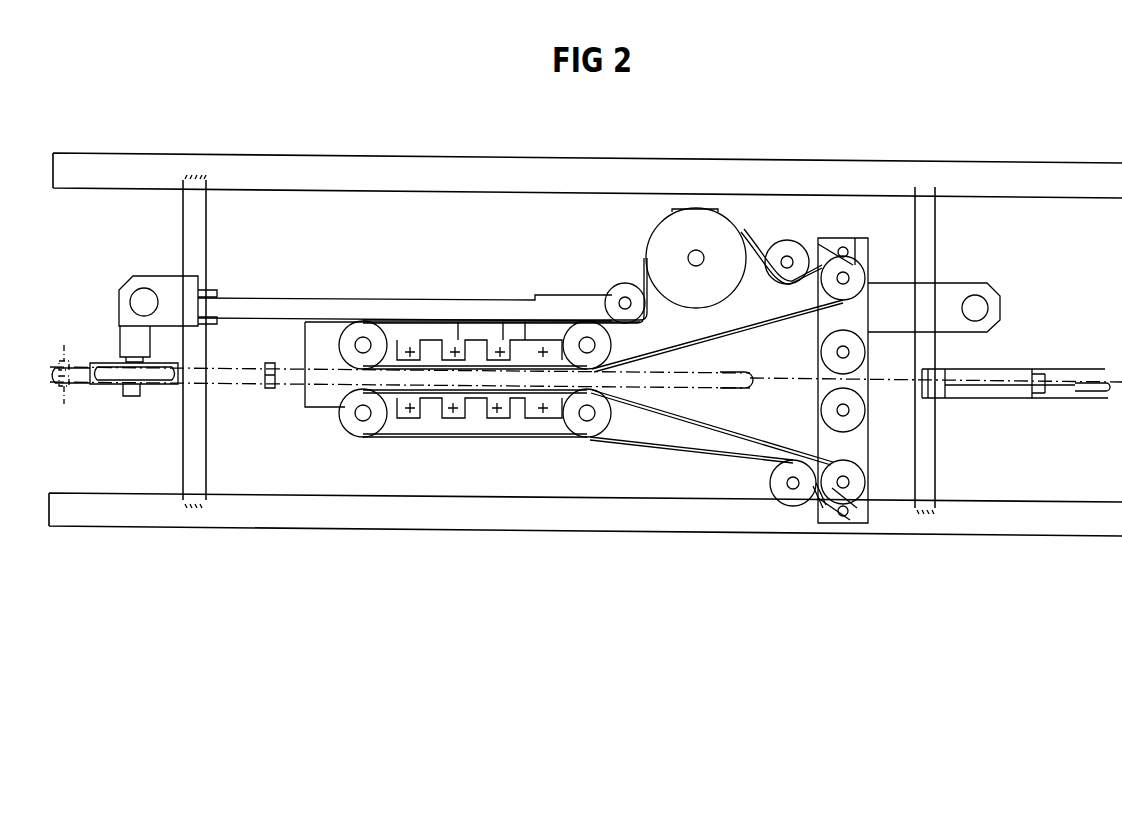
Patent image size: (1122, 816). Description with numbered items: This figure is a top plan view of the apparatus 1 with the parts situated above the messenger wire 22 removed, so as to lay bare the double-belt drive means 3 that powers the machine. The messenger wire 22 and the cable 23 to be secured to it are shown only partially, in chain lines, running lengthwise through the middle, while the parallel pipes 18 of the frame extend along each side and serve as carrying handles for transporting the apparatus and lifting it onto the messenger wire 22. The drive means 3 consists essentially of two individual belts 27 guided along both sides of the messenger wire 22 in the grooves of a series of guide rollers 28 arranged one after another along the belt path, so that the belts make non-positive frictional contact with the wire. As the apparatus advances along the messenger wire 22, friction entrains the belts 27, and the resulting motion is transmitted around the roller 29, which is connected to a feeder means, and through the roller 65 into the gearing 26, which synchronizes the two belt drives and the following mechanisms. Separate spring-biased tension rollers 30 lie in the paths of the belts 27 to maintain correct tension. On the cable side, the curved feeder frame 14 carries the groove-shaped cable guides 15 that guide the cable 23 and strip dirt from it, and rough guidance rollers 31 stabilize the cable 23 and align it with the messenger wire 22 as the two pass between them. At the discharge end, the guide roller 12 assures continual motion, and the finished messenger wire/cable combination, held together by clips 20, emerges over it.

The parallel pipes 18 is at (366, 170).
The apparatus 1 is at (285, 294).
The fastening elements or clips 20 is at (65, 346).
The messenger wire 22 is at (77, 403).
The guide roller 12 is at (160, 386).
The double-belt drive means 3 is at (318, 418).
The guide rollers 28 is at (446, 345).
The roller 29 is at (660, 253).
The tension rollers 30 is at (787, 252).
The roller 65 is at (855, 272).
The gearing 26 is at (828, 325).
The belts 27 is at (716, 335).
The rough guidance rollers 31 is at (860, 413).
The feeder frame 14 is at (985, 400).
The cable guides 15 is at (1040, 400).
The cable 23 is at (1093, 400).